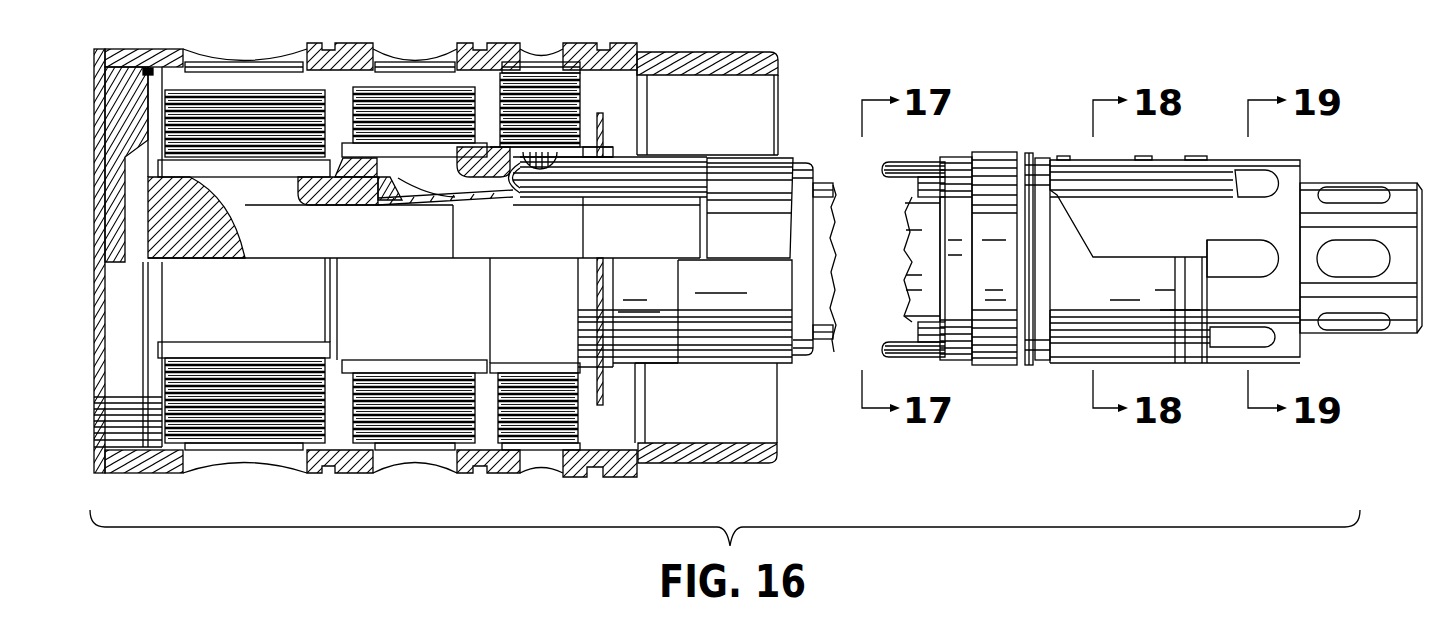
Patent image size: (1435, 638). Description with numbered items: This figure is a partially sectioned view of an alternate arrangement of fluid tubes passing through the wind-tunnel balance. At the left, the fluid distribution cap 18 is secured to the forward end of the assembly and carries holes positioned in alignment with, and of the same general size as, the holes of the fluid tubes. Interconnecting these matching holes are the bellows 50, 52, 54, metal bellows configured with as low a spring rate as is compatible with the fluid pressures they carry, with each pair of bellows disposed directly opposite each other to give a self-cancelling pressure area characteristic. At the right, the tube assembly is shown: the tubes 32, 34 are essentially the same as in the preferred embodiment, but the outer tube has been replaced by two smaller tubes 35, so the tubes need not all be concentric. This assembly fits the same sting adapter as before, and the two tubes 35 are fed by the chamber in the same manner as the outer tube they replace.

The fluid distribution cap 18 is at (122, 49).
The bellows 50 is at (233, 87).
The bellows 52 is at (405, 82).
The bellows 54 is at (537, 80).
The tube 32 is at (912, 267).
The tube 34 is at (960, 155).
The tubes 35 is at (910, 160).